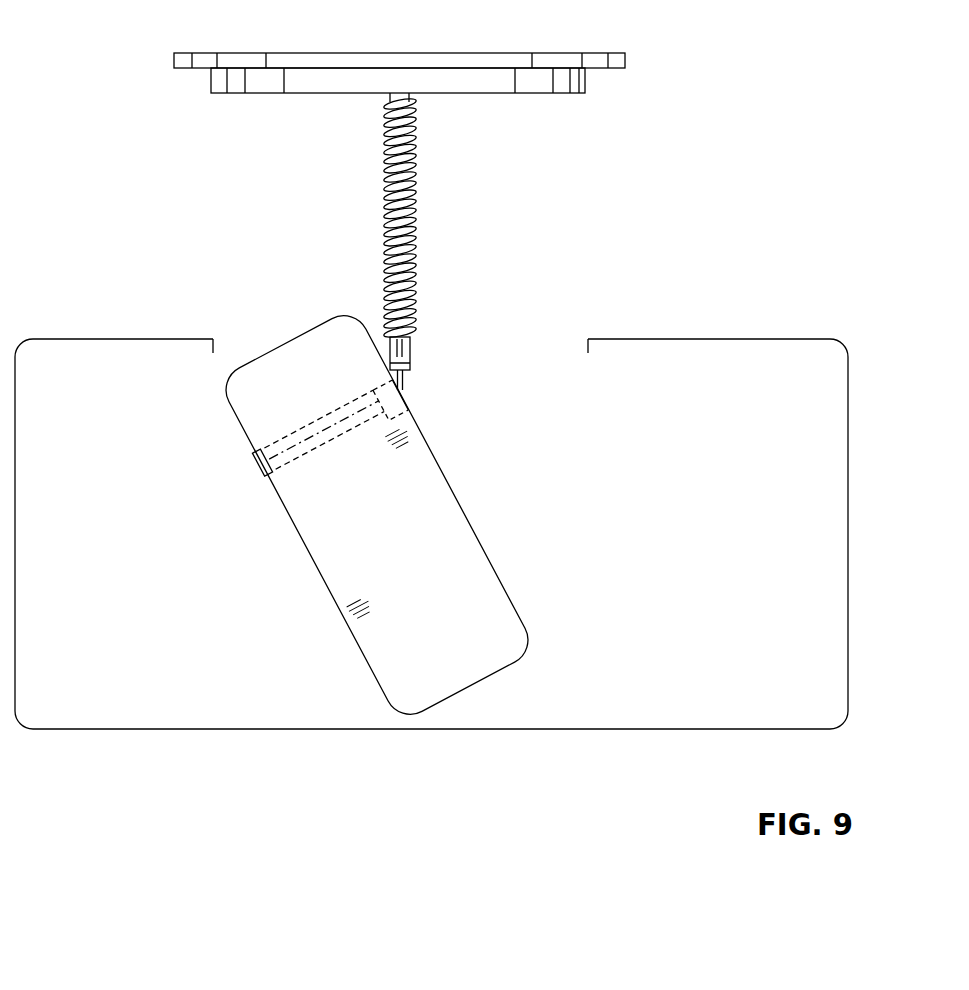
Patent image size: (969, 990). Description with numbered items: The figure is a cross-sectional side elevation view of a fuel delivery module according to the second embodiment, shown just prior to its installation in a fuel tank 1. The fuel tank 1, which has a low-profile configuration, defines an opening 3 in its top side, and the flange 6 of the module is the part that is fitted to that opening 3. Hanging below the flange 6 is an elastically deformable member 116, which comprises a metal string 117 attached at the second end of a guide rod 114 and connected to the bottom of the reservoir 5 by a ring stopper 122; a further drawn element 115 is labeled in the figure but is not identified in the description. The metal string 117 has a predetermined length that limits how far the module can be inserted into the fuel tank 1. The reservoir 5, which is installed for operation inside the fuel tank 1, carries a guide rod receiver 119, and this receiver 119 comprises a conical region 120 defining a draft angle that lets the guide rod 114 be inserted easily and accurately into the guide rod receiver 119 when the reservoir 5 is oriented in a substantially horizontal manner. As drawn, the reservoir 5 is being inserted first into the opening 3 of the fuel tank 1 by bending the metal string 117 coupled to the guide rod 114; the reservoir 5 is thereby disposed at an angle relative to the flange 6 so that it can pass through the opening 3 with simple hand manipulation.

The fuel tank 1 is at (760, 286).
The opening 3 is at (528, 325).
The reservoir 5 is at (482, 578).
The flange 6 is at (535, 60).
The guide rod 114 is at (405, 382).
The spring 115 is at (412, 308).
The elastically deformable member 116 is at (424, 392).
The metal string 117 is at (405, 355).
The guide rod receiver 119 is at (297, 433).
The conical region 120 is at (382, 382).
The ring stopper 122 is at (265, 473).